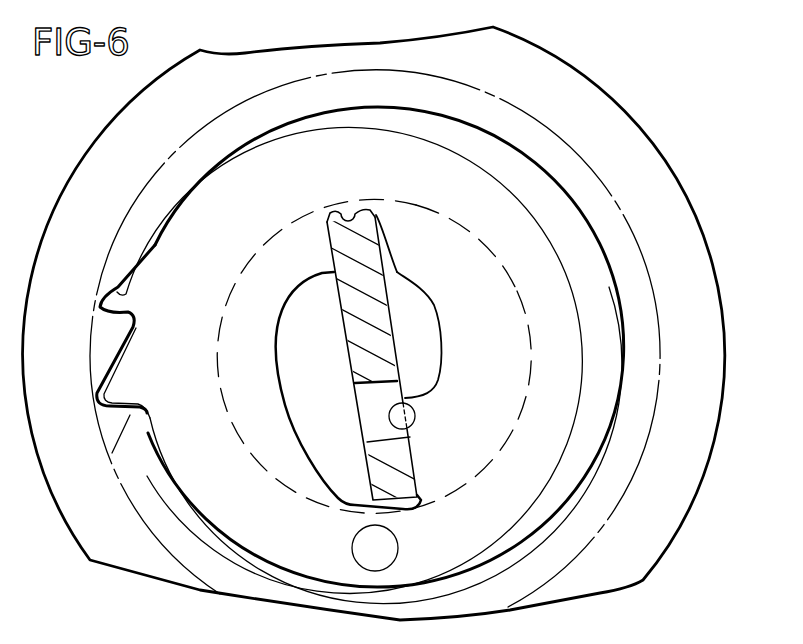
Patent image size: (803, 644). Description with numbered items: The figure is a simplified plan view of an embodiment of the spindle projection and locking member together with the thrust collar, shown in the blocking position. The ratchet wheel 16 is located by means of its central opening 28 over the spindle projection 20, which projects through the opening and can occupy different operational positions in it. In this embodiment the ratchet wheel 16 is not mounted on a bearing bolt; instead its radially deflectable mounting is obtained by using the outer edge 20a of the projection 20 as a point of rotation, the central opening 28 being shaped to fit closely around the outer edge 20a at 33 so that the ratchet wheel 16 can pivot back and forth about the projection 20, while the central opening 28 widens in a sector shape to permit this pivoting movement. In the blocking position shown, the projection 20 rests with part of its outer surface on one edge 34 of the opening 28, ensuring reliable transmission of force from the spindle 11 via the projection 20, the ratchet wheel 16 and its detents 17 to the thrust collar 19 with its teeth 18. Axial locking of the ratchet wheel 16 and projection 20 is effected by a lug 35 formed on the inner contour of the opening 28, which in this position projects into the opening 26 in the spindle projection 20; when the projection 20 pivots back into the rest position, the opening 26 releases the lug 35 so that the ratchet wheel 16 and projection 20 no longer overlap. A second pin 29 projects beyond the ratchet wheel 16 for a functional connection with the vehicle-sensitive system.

The spindle 11 is at (255, 254).
The ratchet wheel 16 is at (428, 224).
The detents 17 is at (118, 293).
The teeth 18 is at (289, 82).
The thrust collar 19 is at (315, 57).
The spindle projection 20 is at (370, 379).
The outer edge 20a is at (345, 213).
The opening 26 is at (368, 402).
The central opening 28 is at (382, 335).
The second pin 29 is at (388, 548).
The close-fitting region 33 is at (383, 222).
The edge of the opening 34 is at (403, 460).
The lug 35 is at (412, 413).